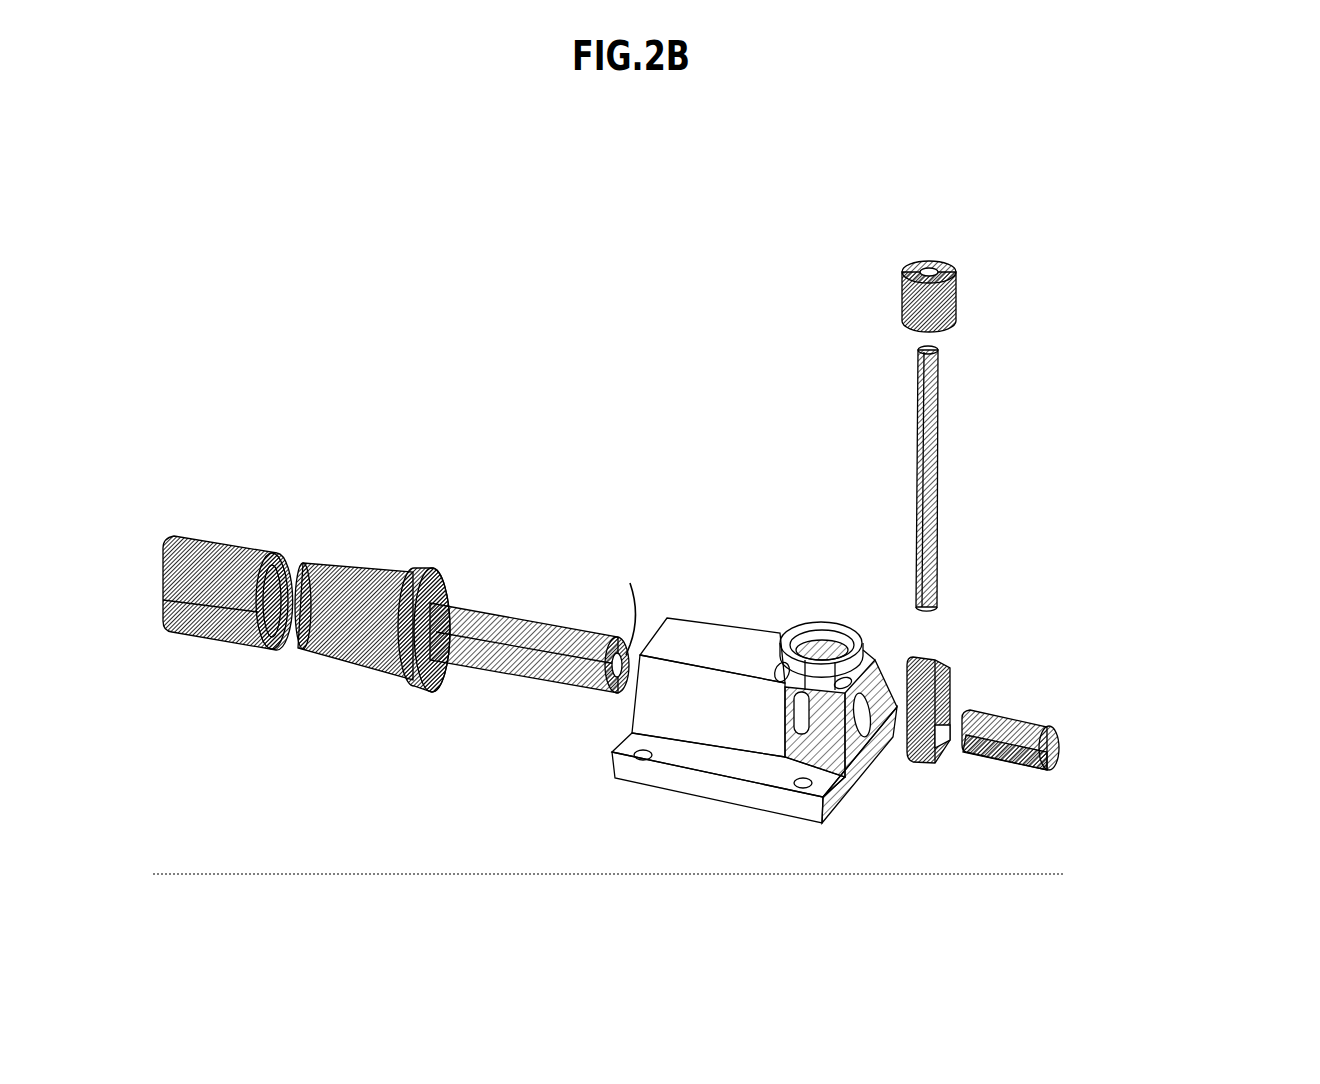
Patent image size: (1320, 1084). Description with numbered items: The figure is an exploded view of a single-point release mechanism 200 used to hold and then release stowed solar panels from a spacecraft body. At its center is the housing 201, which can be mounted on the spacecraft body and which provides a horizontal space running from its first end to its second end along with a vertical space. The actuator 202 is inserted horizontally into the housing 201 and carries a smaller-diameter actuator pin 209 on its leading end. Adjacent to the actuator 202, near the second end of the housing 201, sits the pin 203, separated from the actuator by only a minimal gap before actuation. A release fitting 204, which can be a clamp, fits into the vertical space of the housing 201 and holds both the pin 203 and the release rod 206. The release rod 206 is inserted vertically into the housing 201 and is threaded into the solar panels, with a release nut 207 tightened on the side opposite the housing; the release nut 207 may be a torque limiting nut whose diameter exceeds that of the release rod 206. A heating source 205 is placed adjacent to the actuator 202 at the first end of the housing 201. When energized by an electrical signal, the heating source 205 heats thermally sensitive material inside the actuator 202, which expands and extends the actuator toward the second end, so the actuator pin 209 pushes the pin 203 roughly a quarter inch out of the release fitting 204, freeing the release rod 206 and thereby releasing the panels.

The single-point release mechanism 200 is at (664, 923).
The housing 201 is at (682, 753).
The actuator 202 is at (509, 541).
The pin 203 is at (969, 802).
The release fitting 204 is at (1032, 592).
The heating source 205 is at (273, 678).
The release rod 206 is at (818, 428).
The release nut 207 is at (1075, 324).
The actuator pin 209 is at (622, 593).